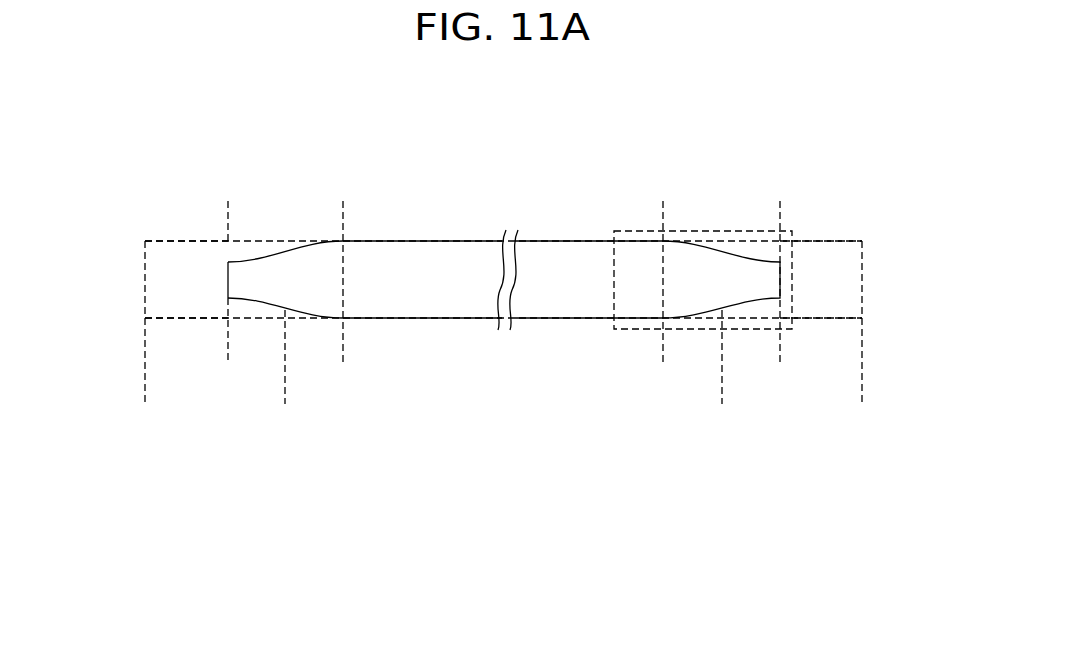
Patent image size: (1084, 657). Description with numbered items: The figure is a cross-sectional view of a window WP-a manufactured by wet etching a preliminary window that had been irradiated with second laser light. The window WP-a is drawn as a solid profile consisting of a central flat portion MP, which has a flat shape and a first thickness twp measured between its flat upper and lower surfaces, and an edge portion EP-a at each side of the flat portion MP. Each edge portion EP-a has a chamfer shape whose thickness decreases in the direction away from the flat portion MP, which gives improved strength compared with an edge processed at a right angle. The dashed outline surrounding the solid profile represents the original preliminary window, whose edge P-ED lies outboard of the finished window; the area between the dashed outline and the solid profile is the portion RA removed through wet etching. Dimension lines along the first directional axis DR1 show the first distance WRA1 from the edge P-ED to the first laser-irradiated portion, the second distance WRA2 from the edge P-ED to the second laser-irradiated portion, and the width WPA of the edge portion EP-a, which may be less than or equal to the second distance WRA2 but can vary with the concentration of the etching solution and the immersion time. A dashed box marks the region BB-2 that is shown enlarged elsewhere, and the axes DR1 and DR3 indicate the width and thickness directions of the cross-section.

The window WP-a is at (791, 155).
The edge portion EP-a is at (780, 201).
The flat portion MP is at (343, 201).
The removed portion RA is at (835, 259).
The edge of the preliminary window P-ED is at (146, 278).
The region BB-2 is at (621, 330).
The first thickness twp is at (552, 241).
The first distance WRA1 is at (862, 362).
The width of the edge portion WPA is at (780, 362).
The second distance WRA2 is at (862, 404).
The first directional axis DR1 is at (60, 530).
The third directional axis DR3 is at (60, 530).